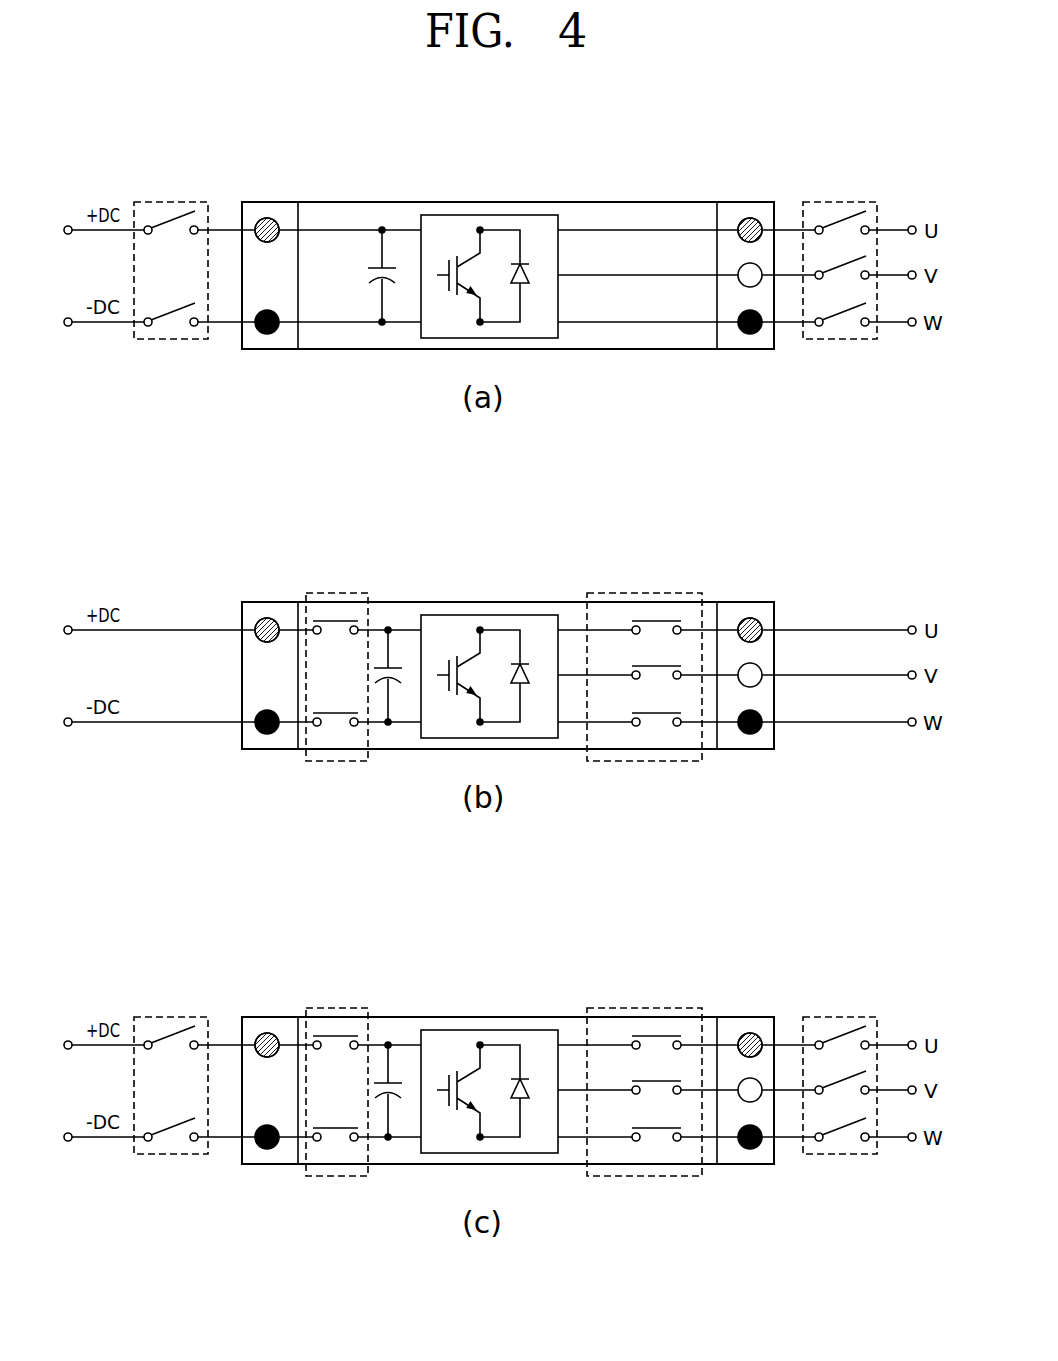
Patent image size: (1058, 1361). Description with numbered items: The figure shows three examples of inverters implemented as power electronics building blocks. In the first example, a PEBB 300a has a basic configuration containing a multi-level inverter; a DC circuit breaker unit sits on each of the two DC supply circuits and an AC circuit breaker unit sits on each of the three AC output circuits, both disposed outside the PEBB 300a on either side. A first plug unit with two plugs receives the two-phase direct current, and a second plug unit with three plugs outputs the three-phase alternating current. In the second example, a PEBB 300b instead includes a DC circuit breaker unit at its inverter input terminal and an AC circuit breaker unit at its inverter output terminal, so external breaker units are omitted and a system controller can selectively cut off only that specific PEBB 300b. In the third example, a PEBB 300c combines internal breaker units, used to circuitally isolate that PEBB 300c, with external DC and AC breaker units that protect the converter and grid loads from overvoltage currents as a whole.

The PEBB 300a is at (652, 200).
The PEBB 300b is at (508, 640).
The PEBB 300c is at (508, 1055).